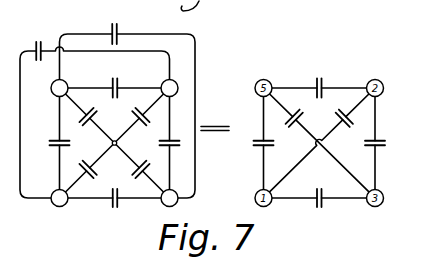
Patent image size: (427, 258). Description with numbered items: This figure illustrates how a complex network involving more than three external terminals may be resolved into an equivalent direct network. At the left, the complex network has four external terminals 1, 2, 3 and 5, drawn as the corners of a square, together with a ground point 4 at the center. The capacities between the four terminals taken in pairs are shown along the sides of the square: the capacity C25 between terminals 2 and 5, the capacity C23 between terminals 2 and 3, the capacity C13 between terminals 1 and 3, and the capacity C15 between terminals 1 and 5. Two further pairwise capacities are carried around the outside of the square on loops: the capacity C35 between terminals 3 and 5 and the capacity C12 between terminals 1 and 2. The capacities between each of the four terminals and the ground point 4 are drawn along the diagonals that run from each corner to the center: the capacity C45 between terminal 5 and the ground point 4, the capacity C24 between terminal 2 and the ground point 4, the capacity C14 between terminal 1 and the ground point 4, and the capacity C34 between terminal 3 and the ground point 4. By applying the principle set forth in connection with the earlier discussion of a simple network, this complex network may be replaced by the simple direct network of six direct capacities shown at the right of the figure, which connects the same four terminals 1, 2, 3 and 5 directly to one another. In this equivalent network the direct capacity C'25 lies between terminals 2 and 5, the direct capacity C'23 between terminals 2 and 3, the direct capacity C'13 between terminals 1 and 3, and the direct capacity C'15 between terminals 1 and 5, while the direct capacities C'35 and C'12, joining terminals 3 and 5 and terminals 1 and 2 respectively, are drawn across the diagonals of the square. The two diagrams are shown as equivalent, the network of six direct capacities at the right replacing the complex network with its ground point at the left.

The capacity between terminals 3 and 5 C35 is at (118, 27).
The capacity between terminals 1 and 2 C12 is at (42, 34).
The capacity between terminals 2 and 5 C25 is at (112, 81).
The capacity between terminals 1 and 3 C13 is at (112, 190).
The capacity between terminals 1 and 5 C15 is at (50, 143).
The capacity between terminals 2 and 3 C23 is at (177, 149).
The capacity between terminal 5 and ground point C45 is at (96, 110).
The capacity between terminal 2 and ground point C24 is at (134, 116).
The capacity between terminal 1 and ground point C14 is at (88, 160).
The capacity between terminal 3 and ground point C34 is at (146, 160).
The terminal 1 is at (59, 198).
The terminal 2 is at (169, 88).
The terminal 3 is at (169, 198).
The ground point 4 is at (115, 136).
The terminal 5 is at (59, 88).
The direct capacity between terminals 2 and 5 C'25 is at (320, 79).
The direct capacity between terminals 1 and 3 C'13 is at (320, 189).
The direct capacity between terminals 1 and 5 C'15 is at (250, 143).
The direct capacity between terminals 2 and 3 C'23 is at (388, 143).
The direct capacity between terminals 3 and 5 C'35 is at (319, 143).
The direct capacity between terminals 1 and 2 C'12 is at (319, 143).